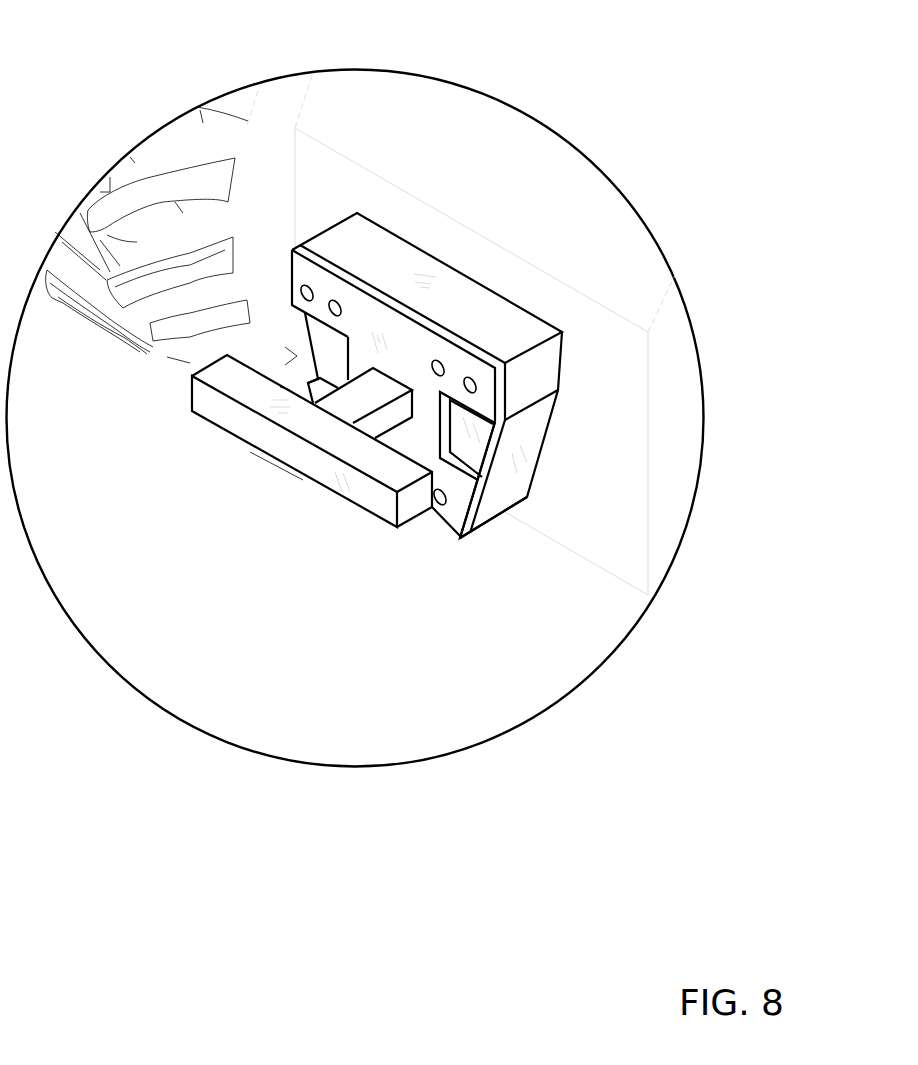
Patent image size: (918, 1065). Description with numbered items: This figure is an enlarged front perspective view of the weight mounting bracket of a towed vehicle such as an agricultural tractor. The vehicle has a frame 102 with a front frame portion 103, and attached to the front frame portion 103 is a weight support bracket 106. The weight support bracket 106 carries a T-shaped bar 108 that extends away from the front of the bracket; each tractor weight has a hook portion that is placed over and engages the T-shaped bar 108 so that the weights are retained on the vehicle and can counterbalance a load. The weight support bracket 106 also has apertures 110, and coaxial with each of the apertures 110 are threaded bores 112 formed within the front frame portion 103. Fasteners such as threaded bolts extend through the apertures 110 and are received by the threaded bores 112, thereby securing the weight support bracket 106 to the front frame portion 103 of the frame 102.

The frame 102 is at (595, 567).
The front frame portion 103 is at (383, 260).
The weight support bracket 106 is at (440, 527).
The T-shaped bar 108 is at (310, 473).
The apertures 110 is at (476, 394).
The threaded bores 112 is at (469, 377).